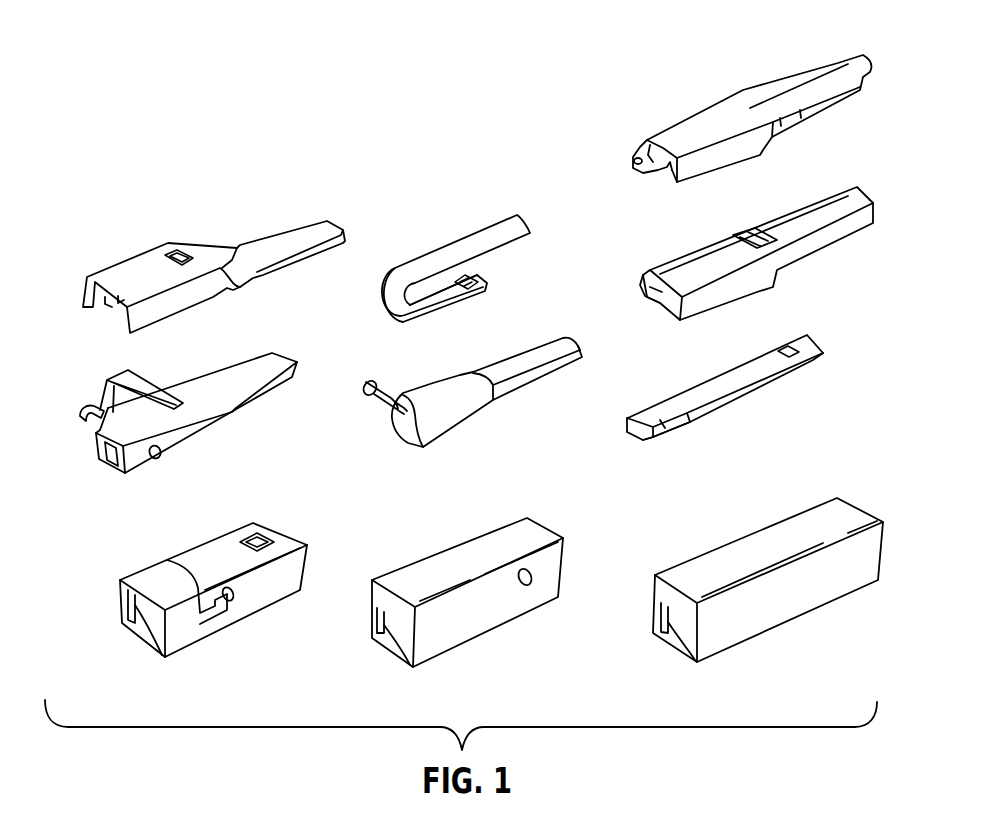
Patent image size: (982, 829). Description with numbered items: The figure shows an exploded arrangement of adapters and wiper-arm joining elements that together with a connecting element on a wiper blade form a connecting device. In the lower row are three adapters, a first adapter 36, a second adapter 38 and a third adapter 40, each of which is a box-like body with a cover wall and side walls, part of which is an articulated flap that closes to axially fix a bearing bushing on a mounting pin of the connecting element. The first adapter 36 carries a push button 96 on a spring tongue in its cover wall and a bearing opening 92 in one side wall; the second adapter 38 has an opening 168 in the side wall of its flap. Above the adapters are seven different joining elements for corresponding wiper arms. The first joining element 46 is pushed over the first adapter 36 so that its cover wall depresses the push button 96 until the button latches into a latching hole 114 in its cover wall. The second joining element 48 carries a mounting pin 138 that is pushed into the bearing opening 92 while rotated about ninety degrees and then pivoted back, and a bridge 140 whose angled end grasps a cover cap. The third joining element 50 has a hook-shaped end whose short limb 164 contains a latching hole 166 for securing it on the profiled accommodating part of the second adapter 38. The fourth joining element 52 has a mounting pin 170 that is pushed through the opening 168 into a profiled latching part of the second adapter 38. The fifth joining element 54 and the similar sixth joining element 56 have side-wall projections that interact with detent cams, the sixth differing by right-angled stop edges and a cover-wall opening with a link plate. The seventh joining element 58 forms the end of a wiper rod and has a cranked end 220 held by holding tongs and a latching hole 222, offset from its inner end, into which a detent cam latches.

The first adapter 36 is at (127, 645).
The second adapter 38 is at (504, 643).
The third adapter 40 is at (784, 644).
The first joining element 46 is at (141, 224).
The second joining element 48 is at (95, 474).
The third joining element 50 is at (453, 214).
The fourth joining element 52 is at (482, 428).
The fifth joining element 54 is at (779, 71).
The sixth joining element 56 is at (798, 199).
The seventh joining element 58 is at (801, 326).
The bearing opening 92 is at (232, 600).
The push button 96 is at (257, 543).
The latching hole 114 is at (184, 254).
The mounting pin 138 is at (93, 406).
The bridge 140 is at (138, 383).
The short limb 164 is at (443, 307).
The latching hole 166 is at (478, 273).
The opening 168 is at (532, 586).
The mounting pin 170 is at (362, 398).
The cranked end 220 is at (670, 424).
The latching hole 222 is at (780, 352).